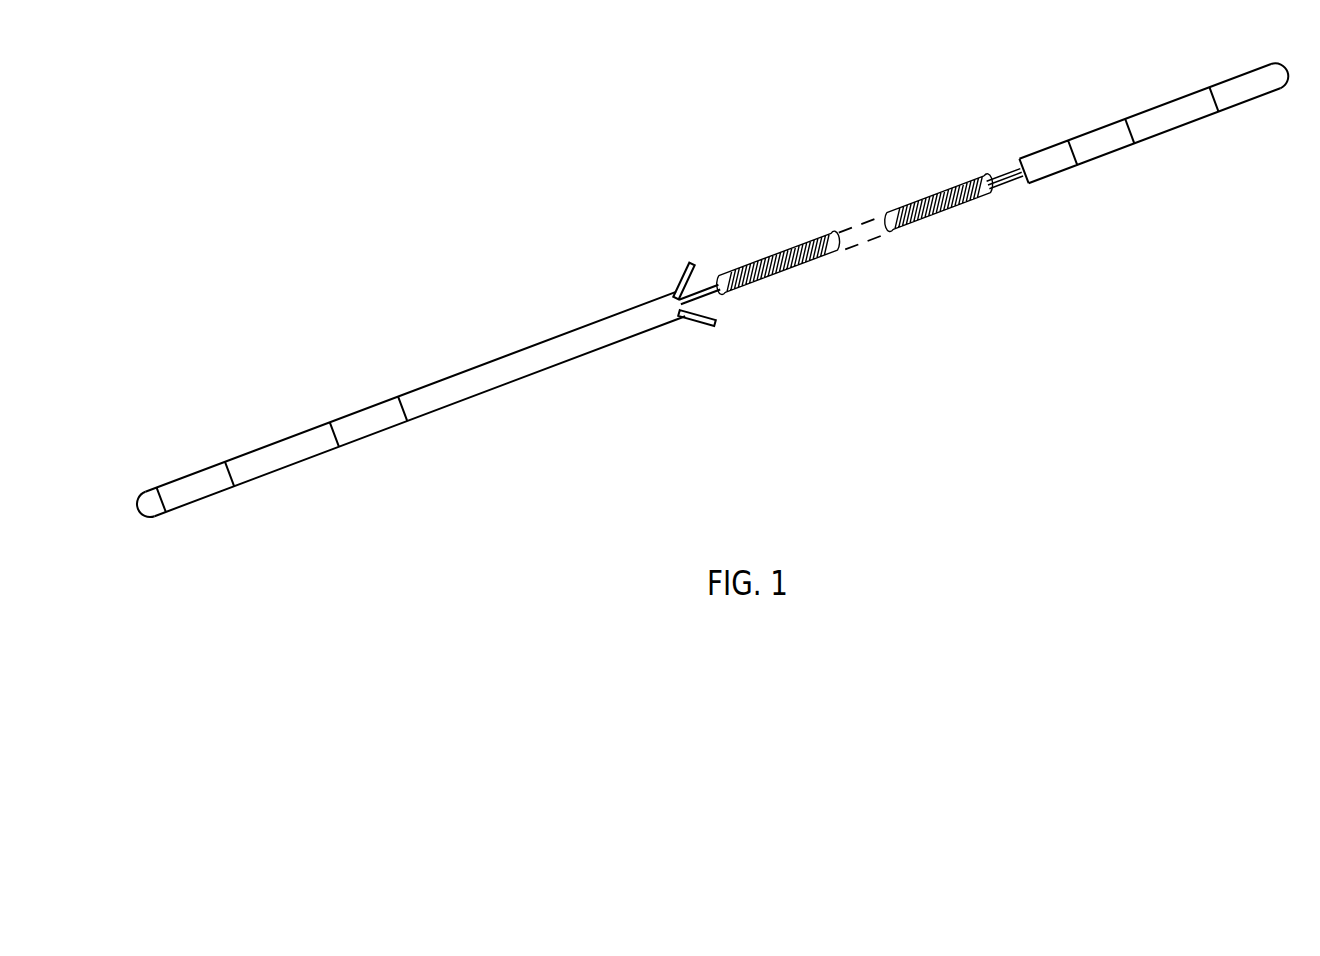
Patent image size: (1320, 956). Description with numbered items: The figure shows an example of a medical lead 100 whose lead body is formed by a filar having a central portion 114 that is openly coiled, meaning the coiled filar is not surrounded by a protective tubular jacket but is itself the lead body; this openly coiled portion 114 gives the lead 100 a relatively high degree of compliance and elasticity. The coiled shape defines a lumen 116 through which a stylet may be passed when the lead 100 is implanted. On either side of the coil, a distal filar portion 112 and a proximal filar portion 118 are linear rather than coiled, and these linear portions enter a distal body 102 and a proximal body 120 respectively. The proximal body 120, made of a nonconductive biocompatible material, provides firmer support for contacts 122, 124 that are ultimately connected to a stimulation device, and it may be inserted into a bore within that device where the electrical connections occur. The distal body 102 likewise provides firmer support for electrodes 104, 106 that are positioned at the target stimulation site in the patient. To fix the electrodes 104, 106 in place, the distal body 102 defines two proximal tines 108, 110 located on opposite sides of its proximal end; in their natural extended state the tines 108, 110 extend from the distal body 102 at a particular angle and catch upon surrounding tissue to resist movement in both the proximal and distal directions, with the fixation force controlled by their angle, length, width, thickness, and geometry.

The medical lead 100 is at (628, 178).
The distal body 102 is at (468, 366).
The electrode 104 is at (212, 487).
The electrode 106 is at (378, 428).
The proximal tine 108 is at (690, 268).
The proximal tine 110 is at (702, 325).
The distal filar portion 112 is at (710, 295).
The central portion of filar 114 is at (780, 277).
The lumen 116 is at (718, 279).
The proximal filar portion 118 is at (1010, 187).
The proximal body 120 is at (1033, 160).
The contact 122 is at (1113, 147).
The contact 124 is at (1243, 92).